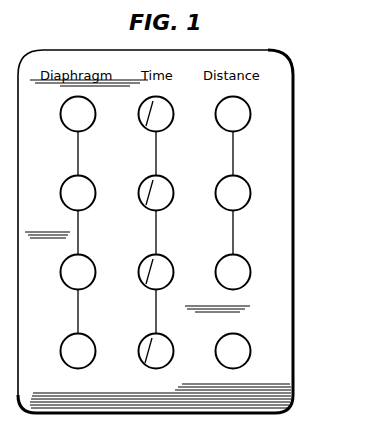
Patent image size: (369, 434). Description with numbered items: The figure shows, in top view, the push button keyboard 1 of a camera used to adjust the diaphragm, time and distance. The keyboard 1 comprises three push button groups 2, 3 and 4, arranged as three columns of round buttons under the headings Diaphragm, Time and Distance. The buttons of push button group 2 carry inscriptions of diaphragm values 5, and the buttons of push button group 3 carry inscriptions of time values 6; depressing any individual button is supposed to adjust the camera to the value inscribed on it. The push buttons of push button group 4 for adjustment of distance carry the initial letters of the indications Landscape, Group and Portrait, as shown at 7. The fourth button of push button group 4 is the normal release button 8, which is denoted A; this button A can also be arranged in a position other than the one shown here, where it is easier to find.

The push button keyboard 1 is at (294, 149).
The push button group 2 is at (80, 308).
The push button group 3 is at (157, 238).
The push button group 4 is at (234, 158).
The diaphragm values 5 is at (66, 181).
The time values 6 is at (148, 128).
The initial letters of distance indications 7 is at (221, 181).
The normal release button 8 is at (246, 343).